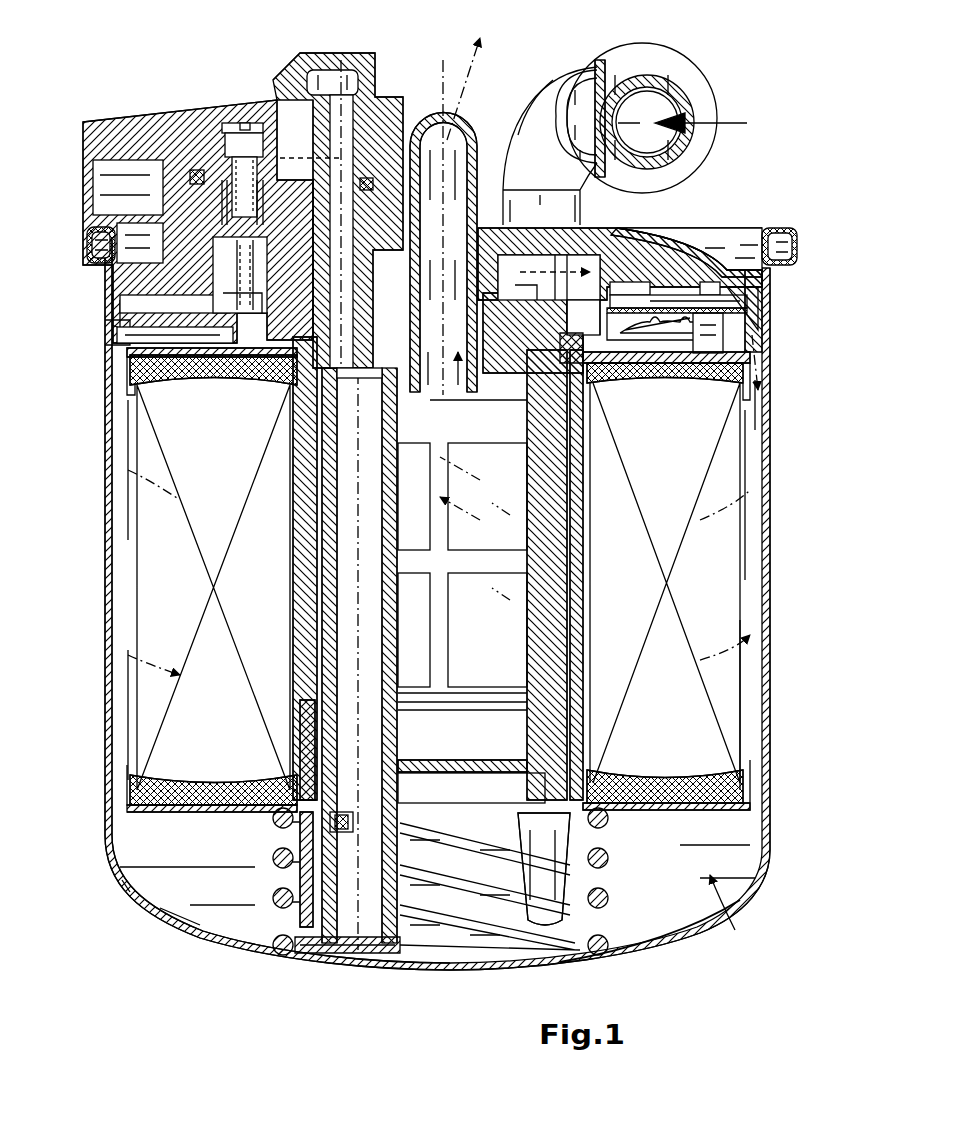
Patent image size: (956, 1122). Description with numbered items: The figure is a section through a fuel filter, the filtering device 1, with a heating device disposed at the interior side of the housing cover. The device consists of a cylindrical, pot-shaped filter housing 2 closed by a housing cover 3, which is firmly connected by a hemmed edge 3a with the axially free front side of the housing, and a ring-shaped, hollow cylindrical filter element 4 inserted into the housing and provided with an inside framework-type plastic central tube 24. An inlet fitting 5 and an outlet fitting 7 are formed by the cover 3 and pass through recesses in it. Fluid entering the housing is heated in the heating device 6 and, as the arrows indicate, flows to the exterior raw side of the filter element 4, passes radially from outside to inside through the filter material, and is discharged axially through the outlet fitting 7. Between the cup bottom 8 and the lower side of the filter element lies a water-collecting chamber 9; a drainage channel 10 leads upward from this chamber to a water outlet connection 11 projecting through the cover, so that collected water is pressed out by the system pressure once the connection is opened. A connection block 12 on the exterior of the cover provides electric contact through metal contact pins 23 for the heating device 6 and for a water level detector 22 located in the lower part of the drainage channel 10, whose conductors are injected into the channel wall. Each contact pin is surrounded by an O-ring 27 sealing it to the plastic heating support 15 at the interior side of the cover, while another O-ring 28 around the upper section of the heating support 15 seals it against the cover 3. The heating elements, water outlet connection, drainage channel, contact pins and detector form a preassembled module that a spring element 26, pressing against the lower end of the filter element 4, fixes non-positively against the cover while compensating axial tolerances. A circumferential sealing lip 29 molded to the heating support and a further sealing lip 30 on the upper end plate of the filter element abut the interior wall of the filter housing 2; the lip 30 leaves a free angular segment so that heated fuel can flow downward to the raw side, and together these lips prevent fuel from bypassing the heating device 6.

The filtering device 1 is at (735, 170).
The filter housing 2 is at (110, 590).
The housing cover 3 is at (697, 262).
The hemmed edge 3a is at (795, 226).
The filter element 4 is at (722, 627).
The inlet fitting 5 is at (550, 115).
The heating device 6 is at (738, 320).
The outlet fitting 7 is at (428, 135).
The cup bottom 8 is at (660, 945).
The water-collecting chamber 9 is at (729, 920).
The drainage channel 10 is at (383, 932).
The water outlet connection 11 is at (350, 55).
The connection block 12 is at (205, 135).
The heating support 15 is at (690, 265).
The water level detector 22 is at (343, 812).
The contact pins 23 is at (222, 192).
The central tube 24 is at (298, 772).
The spring element 26 is at (470, 930).
The O-ring 27 is at (190, 195).
The O-ring 28 is at (188, 177).
The sealing lip 29 is at (104, 287).
The sealing lip 30 is at (104, 350).